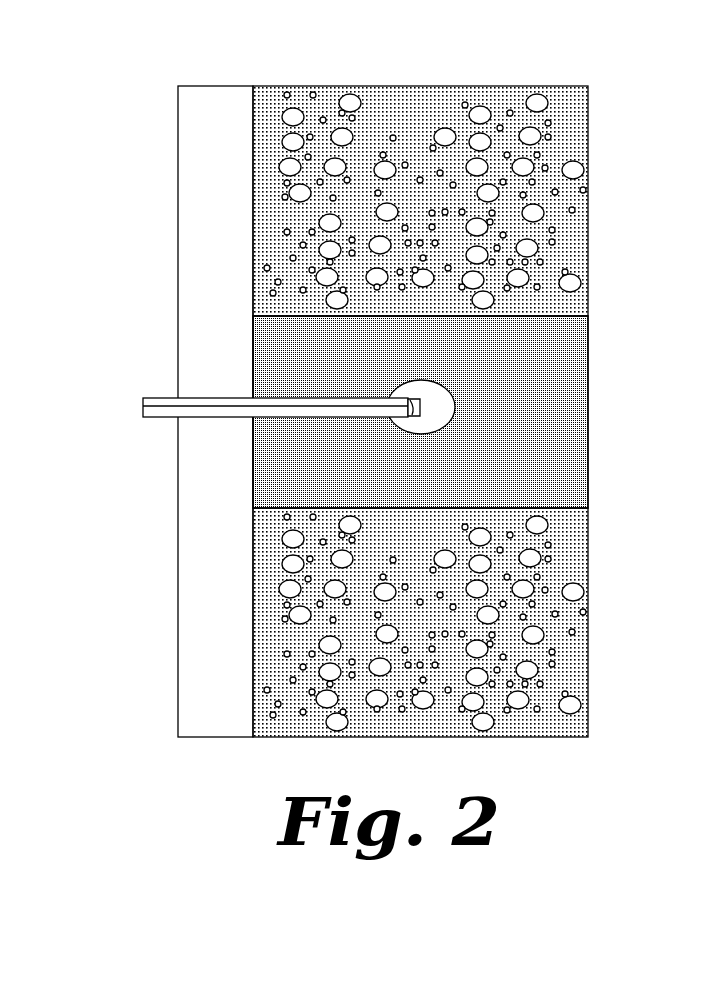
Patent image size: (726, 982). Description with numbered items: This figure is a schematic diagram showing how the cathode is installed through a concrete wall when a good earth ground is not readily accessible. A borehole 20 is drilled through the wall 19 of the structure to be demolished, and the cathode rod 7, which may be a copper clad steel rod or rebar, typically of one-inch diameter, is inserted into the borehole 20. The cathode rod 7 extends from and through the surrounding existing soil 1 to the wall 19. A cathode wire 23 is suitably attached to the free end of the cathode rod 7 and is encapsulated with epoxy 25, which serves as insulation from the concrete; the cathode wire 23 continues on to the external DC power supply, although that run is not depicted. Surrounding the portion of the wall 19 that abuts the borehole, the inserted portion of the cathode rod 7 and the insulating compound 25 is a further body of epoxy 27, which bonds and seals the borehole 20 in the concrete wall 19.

The soil 1 is at (205, 726).
The cathode rod 7 is at (252, 392).
The wall 19 is at (588, 157).
The borehole 20 is at (452, 412).
The cathode wire 23 is at (408, 400).
The epoxy 25 is at (452, 392).
The epoxy 27 is at (485, 463).